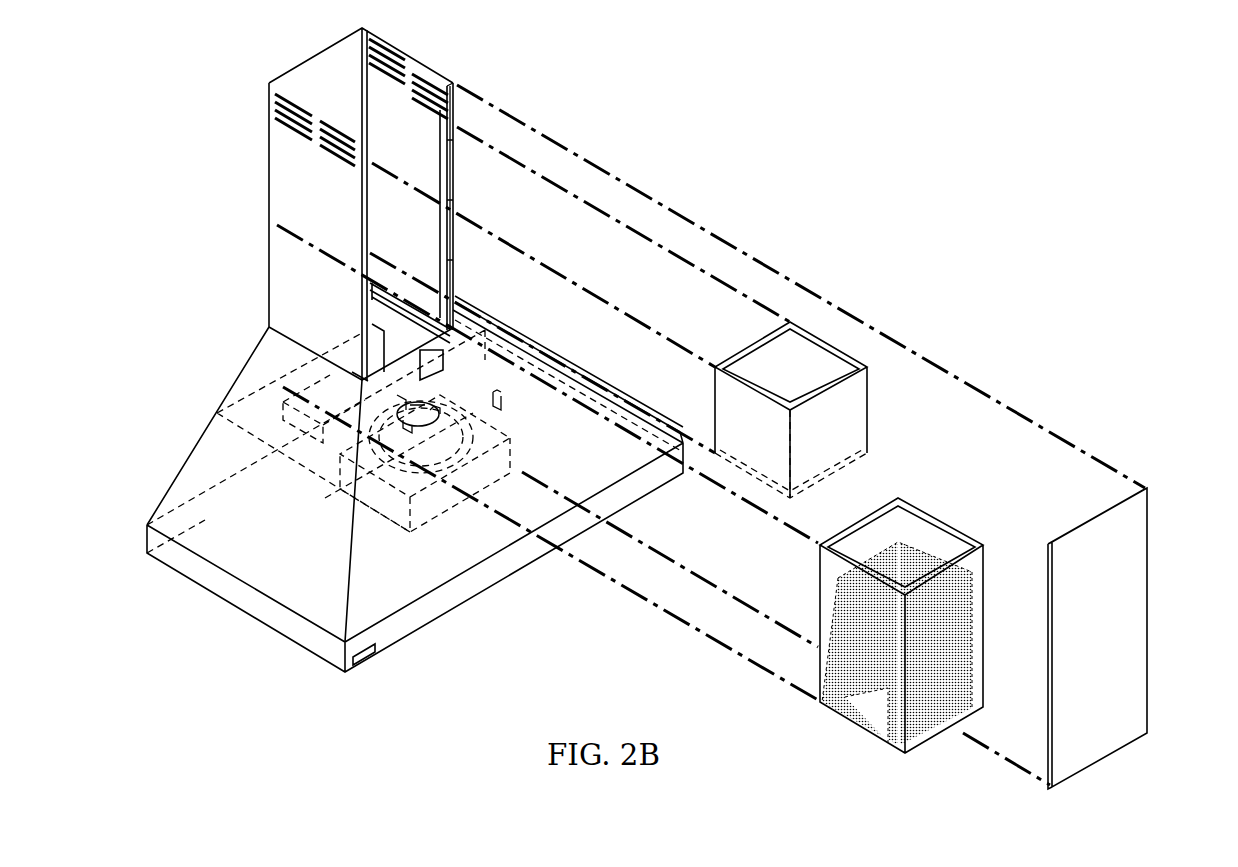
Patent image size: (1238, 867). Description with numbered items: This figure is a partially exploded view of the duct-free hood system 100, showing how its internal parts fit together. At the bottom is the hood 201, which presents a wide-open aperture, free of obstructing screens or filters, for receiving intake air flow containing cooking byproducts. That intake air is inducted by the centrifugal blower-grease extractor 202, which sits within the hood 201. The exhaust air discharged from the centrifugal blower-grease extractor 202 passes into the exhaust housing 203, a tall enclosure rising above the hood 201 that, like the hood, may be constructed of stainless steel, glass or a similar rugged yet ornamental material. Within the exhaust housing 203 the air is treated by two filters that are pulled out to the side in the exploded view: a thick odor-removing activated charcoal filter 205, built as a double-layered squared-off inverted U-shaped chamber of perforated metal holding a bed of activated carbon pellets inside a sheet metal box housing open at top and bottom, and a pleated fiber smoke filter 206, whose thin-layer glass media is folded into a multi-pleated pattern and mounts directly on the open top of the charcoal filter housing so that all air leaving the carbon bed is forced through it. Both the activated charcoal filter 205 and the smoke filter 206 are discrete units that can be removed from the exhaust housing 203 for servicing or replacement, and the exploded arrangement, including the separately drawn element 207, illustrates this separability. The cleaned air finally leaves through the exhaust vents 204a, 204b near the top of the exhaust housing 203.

The duct-free hood system 100 is at (153, 179).
The hood 201 is at (588, 387).
The centrifugal blower-grease extractor 202 is at (425, 513).
The exhaust housing 203 is at (455, 168).
The exhaust vent 204a is at (286, 133).
The exhaust vent 204b is at (377, 79).
The activated charcoal filter 205 is at (1147, 602).
The smoke filter 206 is at (868, 732).
The duct sleeve 207 is at (867, 412).